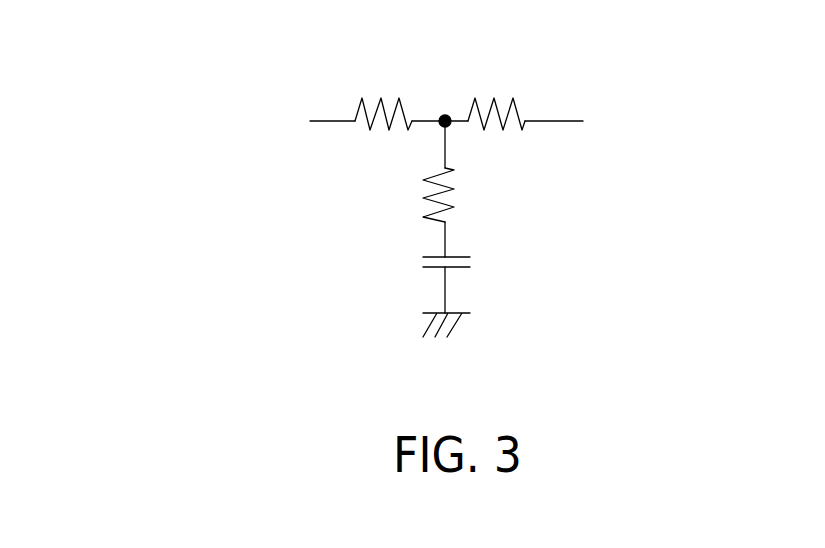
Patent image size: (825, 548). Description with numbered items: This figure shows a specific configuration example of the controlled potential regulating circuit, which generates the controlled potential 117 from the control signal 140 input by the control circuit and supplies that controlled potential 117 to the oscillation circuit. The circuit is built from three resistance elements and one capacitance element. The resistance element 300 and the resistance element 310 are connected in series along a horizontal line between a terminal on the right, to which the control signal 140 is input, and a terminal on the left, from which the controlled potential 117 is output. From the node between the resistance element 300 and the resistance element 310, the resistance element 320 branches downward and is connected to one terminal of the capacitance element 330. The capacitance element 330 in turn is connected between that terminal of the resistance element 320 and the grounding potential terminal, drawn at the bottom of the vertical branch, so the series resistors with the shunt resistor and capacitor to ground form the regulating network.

The controlled potential 117 is at (327, 122).
The control signal 140 is at (568, 122).
The resistance element 300 is at (382, 98).
The resistance element 310 is at (494, 98).
The resistance element 320 is at (455, 187).
The capacitance element 330 is at (470, 257).